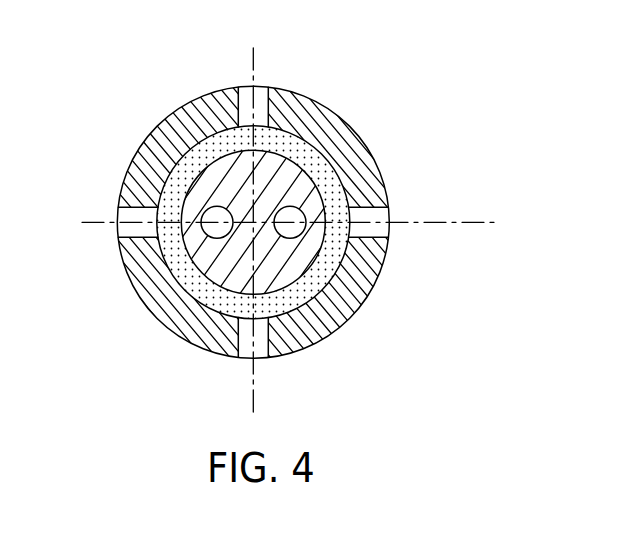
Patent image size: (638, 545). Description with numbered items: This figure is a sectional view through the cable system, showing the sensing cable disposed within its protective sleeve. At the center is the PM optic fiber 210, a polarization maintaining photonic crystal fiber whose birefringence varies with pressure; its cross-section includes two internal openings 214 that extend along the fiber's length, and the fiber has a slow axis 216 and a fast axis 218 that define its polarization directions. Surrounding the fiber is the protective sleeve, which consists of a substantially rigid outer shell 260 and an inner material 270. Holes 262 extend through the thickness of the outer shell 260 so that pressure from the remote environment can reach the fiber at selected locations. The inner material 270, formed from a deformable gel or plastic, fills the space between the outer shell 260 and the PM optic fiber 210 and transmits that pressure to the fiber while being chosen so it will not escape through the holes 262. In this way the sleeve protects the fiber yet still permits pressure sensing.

The PM optic fiber 210 is at (288, 283).
The internal openings 214 is at (207, 233).
The slow axis 216 is at (452, 223).
The fast axis 218 is at (252, 387).
The outer shell 260 is at (338, 116).
The holes 262 is at (264, 73).
The inner material 270 is at (324, 177).